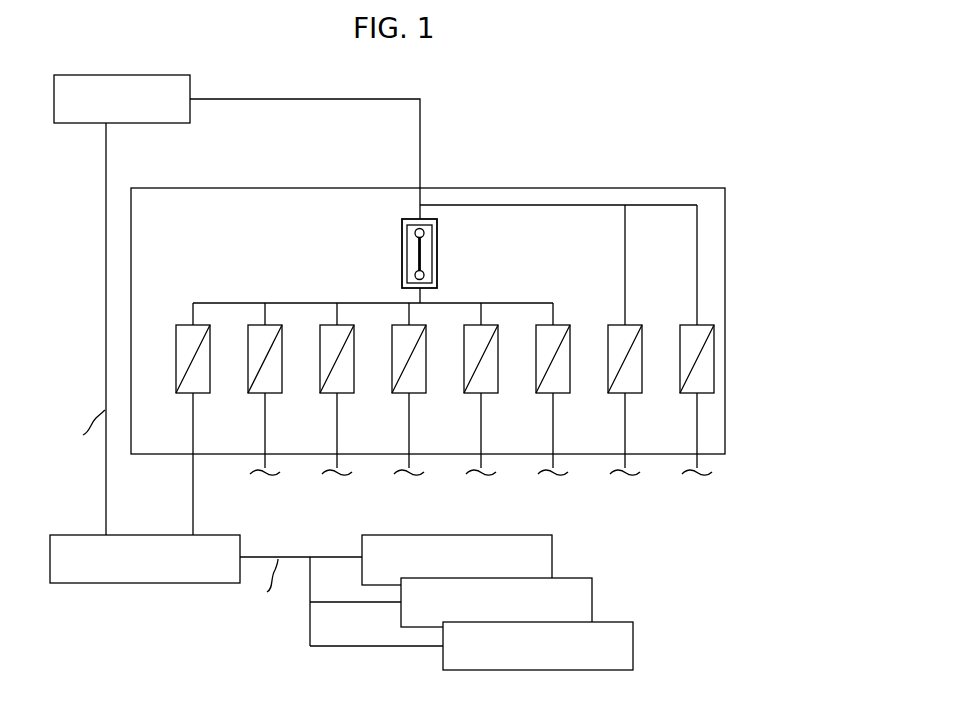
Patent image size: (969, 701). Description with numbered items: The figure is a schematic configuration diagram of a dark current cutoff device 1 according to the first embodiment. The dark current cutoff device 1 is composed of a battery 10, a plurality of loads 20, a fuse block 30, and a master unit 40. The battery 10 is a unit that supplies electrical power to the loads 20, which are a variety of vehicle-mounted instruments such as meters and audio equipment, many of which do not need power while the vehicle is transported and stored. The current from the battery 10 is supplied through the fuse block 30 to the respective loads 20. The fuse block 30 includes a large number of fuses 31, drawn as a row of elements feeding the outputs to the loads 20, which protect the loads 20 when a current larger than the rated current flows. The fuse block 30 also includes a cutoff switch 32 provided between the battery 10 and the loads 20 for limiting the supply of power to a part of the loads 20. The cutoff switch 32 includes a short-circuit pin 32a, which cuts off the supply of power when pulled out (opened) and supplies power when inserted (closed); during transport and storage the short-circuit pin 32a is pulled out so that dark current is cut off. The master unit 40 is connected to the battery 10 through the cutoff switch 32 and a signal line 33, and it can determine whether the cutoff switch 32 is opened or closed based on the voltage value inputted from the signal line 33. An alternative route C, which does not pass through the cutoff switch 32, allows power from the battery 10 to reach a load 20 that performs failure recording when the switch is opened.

The dark current cutoff device 1 is at (491, 107).
The battery 10 is at (73, 124).
The loads 20 is at (552, 557).
The fuse block 30 is at (622, 188).
The fuses 31 is at (175, 357).
The cutoff switch 32 is at (402, 229).
The short-circuit pin 32a is at (418, 248).
The signal line 33 is at (192, 462).
The master unit 40 is at (141, 584).